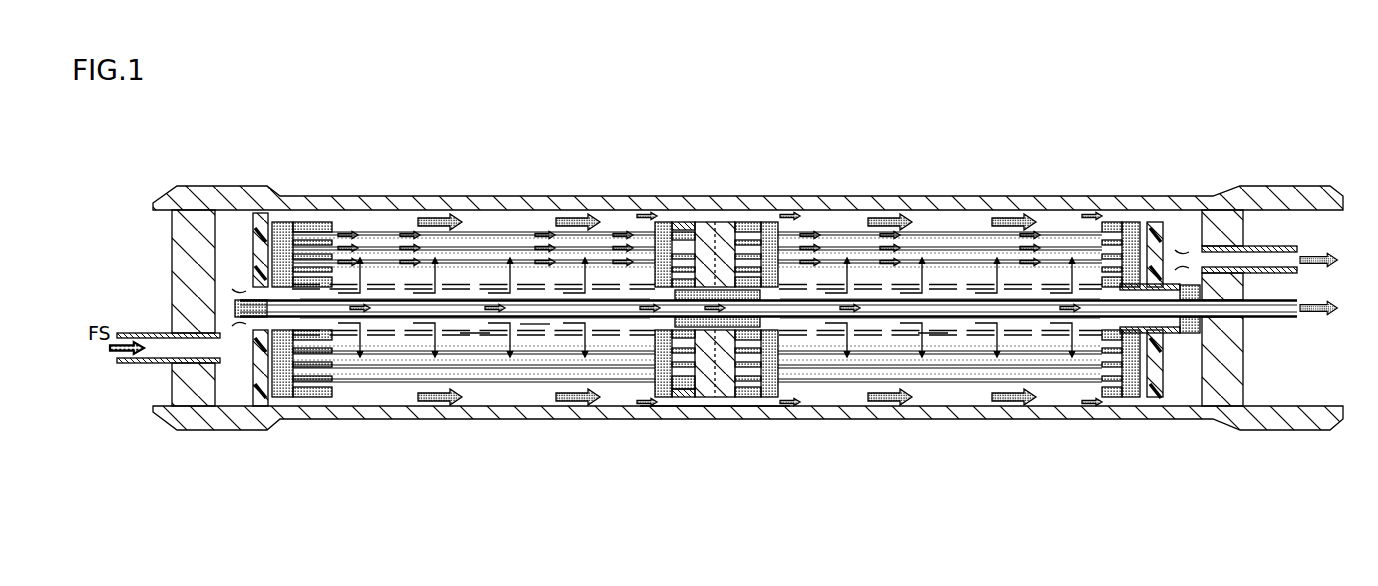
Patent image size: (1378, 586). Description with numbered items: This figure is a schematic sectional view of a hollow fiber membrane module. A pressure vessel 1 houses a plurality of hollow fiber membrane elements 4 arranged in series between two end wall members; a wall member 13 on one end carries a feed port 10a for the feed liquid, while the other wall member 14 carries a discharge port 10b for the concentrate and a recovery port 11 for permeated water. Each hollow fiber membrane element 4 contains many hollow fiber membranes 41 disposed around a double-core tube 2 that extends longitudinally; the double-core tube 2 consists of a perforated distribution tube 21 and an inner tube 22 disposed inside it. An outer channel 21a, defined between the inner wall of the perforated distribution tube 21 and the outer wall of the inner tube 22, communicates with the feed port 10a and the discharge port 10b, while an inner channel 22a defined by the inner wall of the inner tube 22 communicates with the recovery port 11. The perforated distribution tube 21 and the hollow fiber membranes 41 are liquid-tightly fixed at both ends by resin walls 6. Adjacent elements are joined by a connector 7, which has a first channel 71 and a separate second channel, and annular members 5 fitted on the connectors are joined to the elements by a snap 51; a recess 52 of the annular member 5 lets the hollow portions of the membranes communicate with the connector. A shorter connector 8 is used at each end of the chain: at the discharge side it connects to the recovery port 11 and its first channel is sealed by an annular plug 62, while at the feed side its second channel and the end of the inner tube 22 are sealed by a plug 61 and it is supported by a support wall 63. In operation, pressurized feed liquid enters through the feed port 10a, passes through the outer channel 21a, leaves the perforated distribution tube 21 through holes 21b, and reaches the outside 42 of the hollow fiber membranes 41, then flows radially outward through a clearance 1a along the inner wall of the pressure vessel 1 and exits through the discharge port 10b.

The pressure vessel 1 is at (287, 200).
The clearance 1a is at (717, 398).
The double-core tube 2 is at (697, 323).
The hollow fiber membrane element 4 is at (355, 218).
The annular member 5 is at (712, 222).
The resin wall 6 is at (308, 398).
The connector 7 is at (767, 288).
The connector 8 is at (256, 228).
The feed port 10a is at (118, 364).
The discharge port 10b is at (1297, 250).
The recovery port 11 is at (1297, 316).
The wall member 13 is at (214, 408).
The wall member 14 is at (1222, 412).
The perforated distribution tube 21 is at (378, 334).
The outer channel 21a is at (535, 324).
The hole 21b is at (475, 334).
The inner tube 22 is at (413, 318).
The inner channel 22a is at (466, 304).
The hollow fiber membrane 41 is at (388, 232).
The outside of the hollow fiber membranes 42 is at (528, 246).
The snap 51 is at (685, 222).
The recess 52 is at (1145, 334).
The plug 61 is at (232, 308).
The plug 62 is at (1187, 342).
The support wall 63 is at (262, 400).
The first channel 71 is at (786, 290).